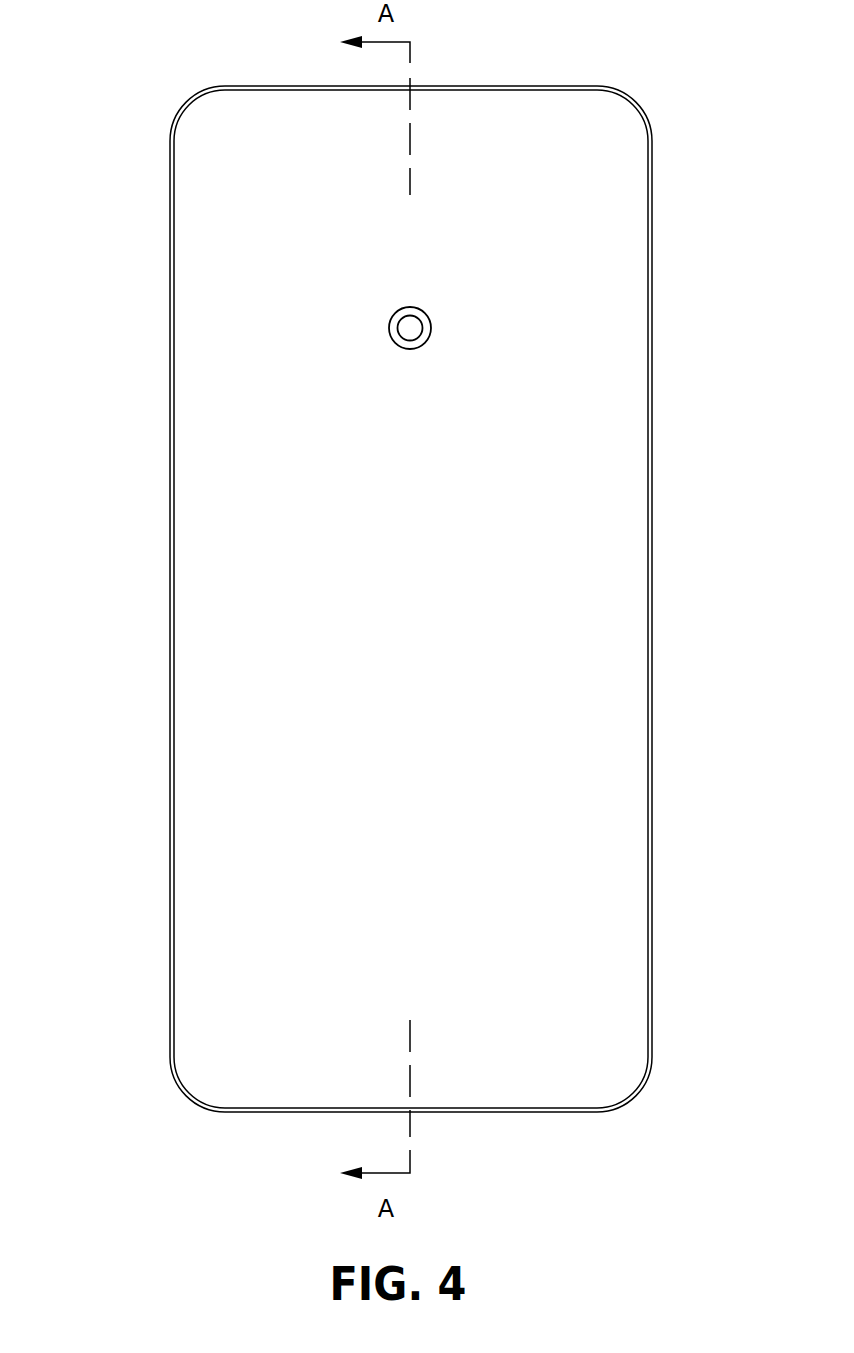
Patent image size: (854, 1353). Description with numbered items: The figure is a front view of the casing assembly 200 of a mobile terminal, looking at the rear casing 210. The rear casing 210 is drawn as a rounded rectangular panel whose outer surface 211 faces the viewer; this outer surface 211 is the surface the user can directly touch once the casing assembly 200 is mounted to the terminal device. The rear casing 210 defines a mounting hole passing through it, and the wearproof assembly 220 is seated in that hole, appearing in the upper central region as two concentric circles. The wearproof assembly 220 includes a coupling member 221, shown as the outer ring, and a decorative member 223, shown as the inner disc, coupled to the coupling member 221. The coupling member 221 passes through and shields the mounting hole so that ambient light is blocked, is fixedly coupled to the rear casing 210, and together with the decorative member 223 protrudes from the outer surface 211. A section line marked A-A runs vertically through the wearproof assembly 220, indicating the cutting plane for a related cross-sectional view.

The casing assembly 200 is at (400, 599).
The rear casing 210 is at (193, 288).
The outer surface 211 is at (208, 624).
The wearproof assembly 220 is at (401, 340).
The coupling member 221 is at (425, 343).
The decorative member 223 is at (410, 330).